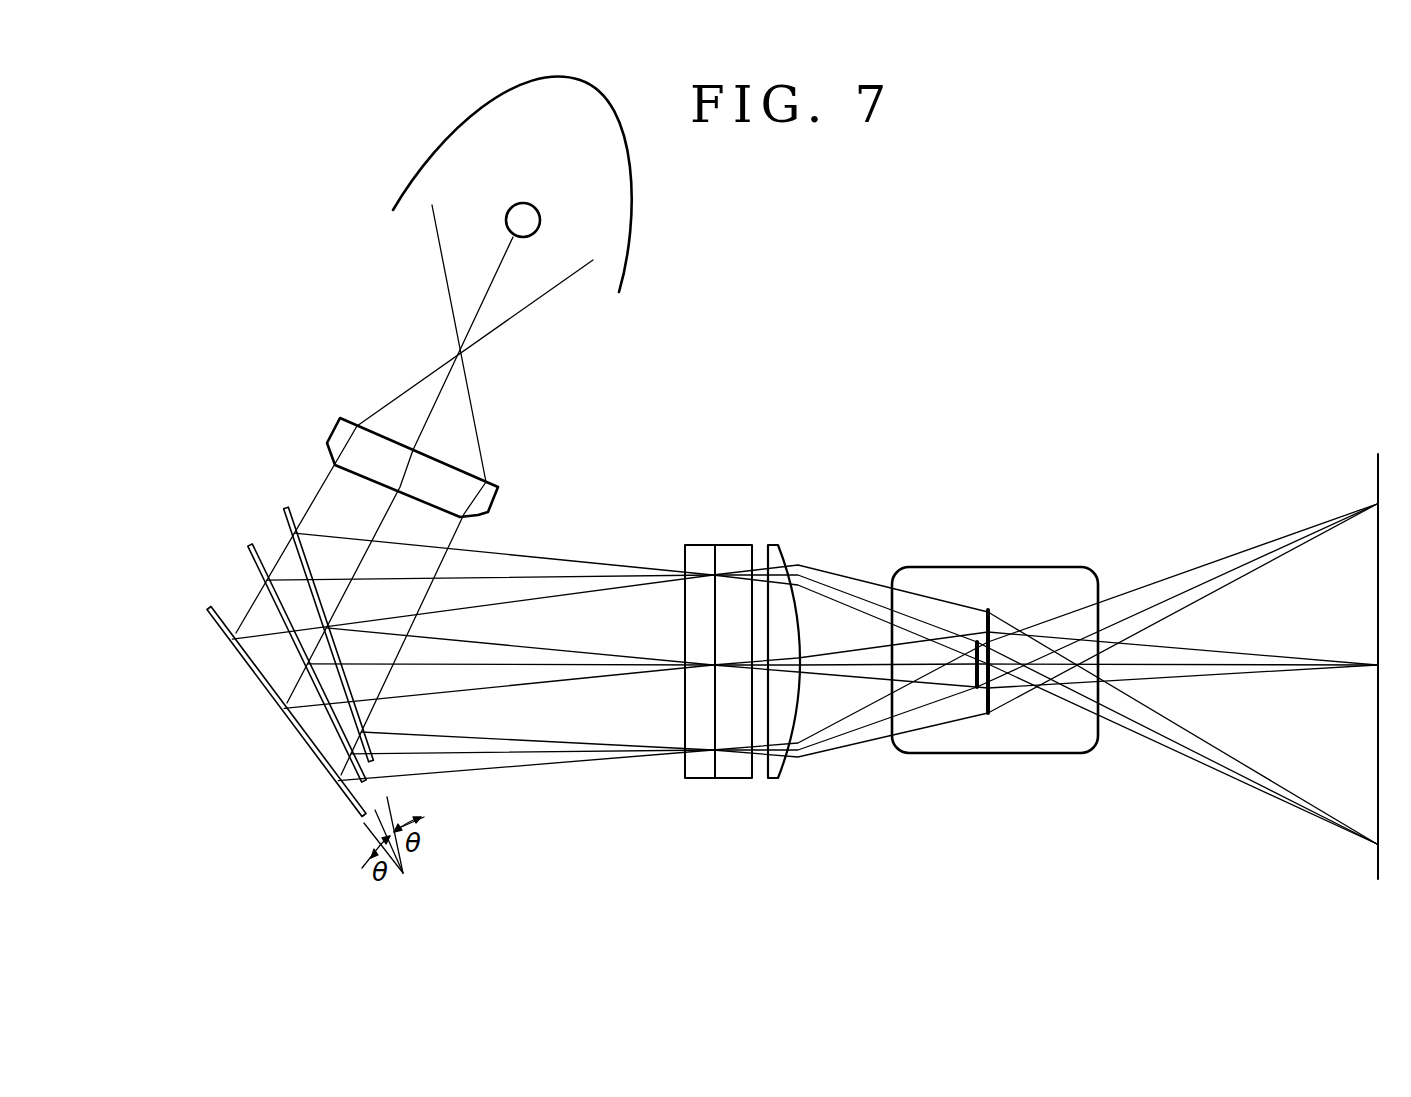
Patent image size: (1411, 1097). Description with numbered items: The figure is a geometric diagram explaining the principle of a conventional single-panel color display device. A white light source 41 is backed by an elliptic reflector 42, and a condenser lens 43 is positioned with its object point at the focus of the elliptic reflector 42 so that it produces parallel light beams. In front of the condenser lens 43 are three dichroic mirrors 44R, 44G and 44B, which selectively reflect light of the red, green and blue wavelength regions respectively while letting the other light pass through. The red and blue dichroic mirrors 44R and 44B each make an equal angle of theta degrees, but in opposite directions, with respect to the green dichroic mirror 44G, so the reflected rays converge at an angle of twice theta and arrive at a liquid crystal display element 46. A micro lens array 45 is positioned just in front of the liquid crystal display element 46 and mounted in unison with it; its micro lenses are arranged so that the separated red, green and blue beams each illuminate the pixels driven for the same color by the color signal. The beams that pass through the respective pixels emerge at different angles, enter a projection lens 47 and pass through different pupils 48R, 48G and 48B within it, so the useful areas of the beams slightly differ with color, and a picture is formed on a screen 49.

The white light source 41 is at (538, 233).
The elliptic reflector 42 is at (628, 240).
The condenser lens 43 is at (343, 442).
The red dichroic mirror 44R is at (286, 510).
The green dichroic mirror 44G is at (250, 547).
The blue dichroic mirror 44B is at (208, 610).
The micro lens array 45 is at (700, 782).
The liquid crystal display element 46 is at (738, 773).
The projection lens 47 is at (953, 742).
The red pupil 48R is at (988, 713).
The green pupil 48G is at (977, 642).
The blue pupil 48B is at (988, 610).
The screen 49 is at (1377, 867).